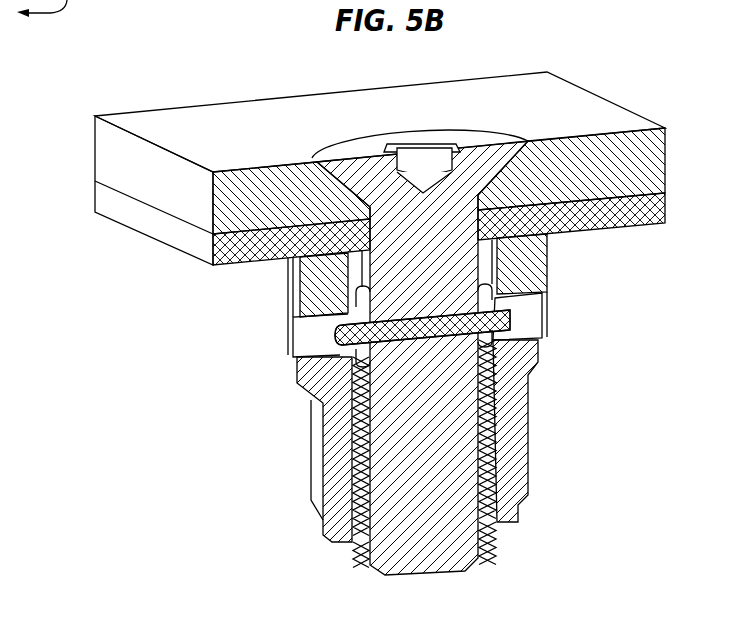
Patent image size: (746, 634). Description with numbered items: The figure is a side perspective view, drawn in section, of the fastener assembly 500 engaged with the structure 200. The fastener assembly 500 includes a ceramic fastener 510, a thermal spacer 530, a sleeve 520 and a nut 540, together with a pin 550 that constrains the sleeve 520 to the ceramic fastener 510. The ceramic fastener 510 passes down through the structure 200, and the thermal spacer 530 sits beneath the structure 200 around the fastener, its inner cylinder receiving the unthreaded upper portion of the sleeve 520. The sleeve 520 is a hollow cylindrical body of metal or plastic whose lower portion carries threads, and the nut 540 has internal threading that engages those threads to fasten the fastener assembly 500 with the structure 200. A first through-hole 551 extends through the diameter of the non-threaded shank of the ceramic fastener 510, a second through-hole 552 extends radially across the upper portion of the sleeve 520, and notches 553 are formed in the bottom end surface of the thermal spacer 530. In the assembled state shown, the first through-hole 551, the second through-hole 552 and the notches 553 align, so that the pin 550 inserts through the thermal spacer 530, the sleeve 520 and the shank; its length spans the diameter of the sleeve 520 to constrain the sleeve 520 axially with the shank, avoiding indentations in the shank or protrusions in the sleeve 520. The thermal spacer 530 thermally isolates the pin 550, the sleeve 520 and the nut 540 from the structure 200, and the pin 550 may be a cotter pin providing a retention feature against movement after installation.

The structure 200 is at (563, 55).
The fastener assembly 500 is at (308, 371).
The ceramic fastener 510 is at (455, 586).
The sleeve 520 is at (334, 569).
The thermal spacer 530 is at (266, 288).
The nut 540 is at (280, 444).
The pin 550 is at (440, 338).
The first through-hole 551 is at (316, 333).
The second through-hole 552 is at (334, 372).
The notches 553 is at (561, 311).